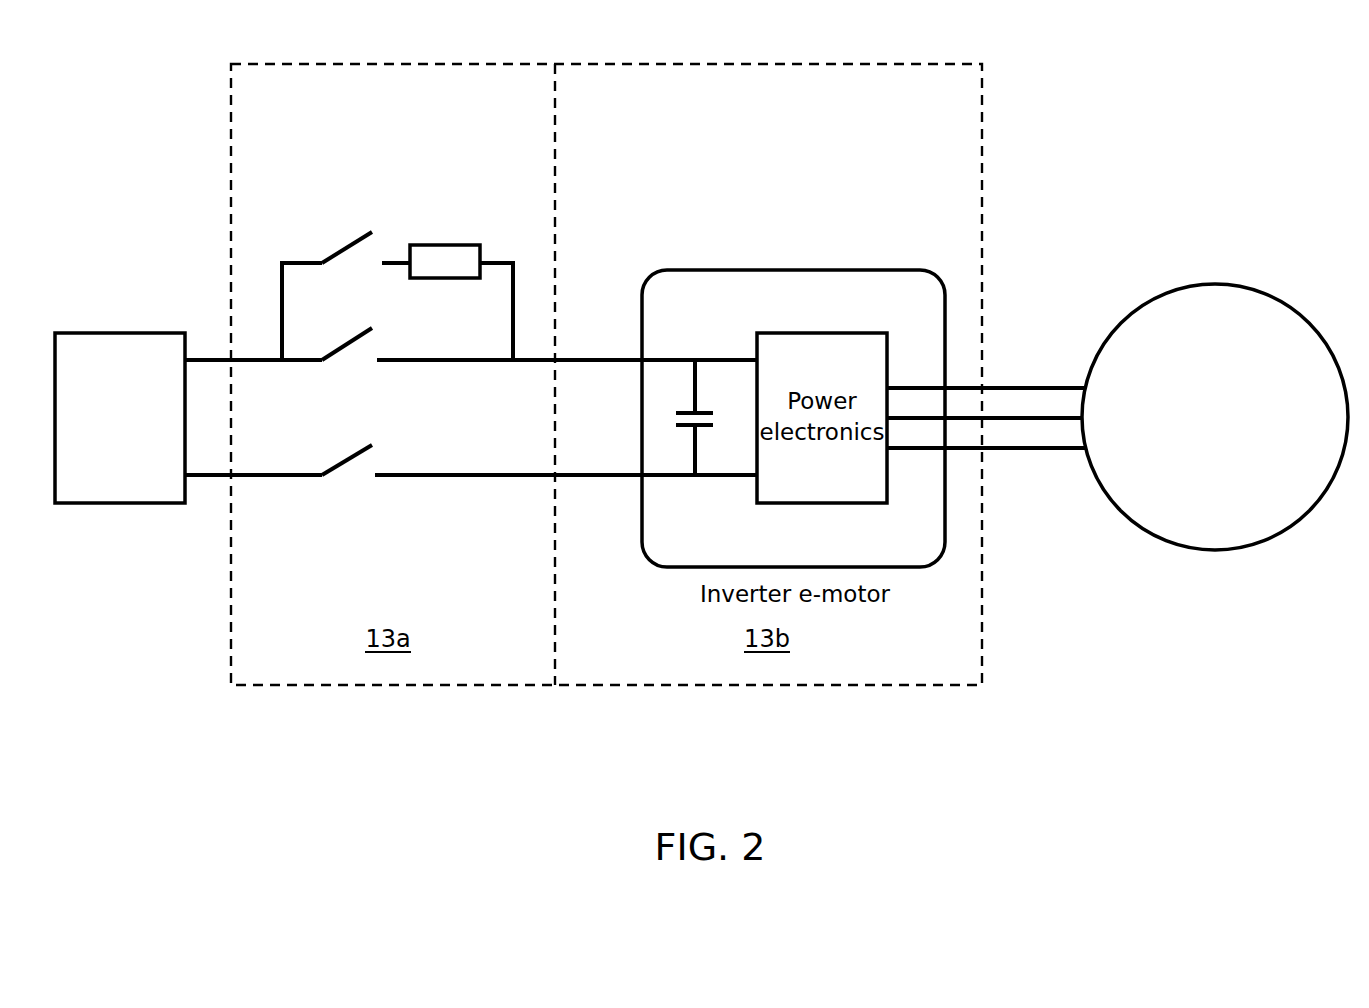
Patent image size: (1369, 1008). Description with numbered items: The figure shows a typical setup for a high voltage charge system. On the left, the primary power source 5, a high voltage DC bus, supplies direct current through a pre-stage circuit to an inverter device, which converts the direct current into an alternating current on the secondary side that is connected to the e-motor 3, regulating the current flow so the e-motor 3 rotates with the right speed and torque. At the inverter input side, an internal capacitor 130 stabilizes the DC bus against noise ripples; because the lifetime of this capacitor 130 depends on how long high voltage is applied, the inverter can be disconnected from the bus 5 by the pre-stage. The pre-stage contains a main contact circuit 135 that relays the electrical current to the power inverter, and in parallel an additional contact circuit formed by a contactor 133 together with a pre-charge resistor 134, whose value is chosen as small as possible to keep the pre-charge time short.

The e-motor 3 is at (1209, 283).
The primary power source 5 is at (91, 333).
The internal capacitor 130 is at (671, 420).
The contactor 133 is at (356, 221).
The pre-charge resistor 134 is at (451, 239).
The main contact circuit 135 is at (346, 373).